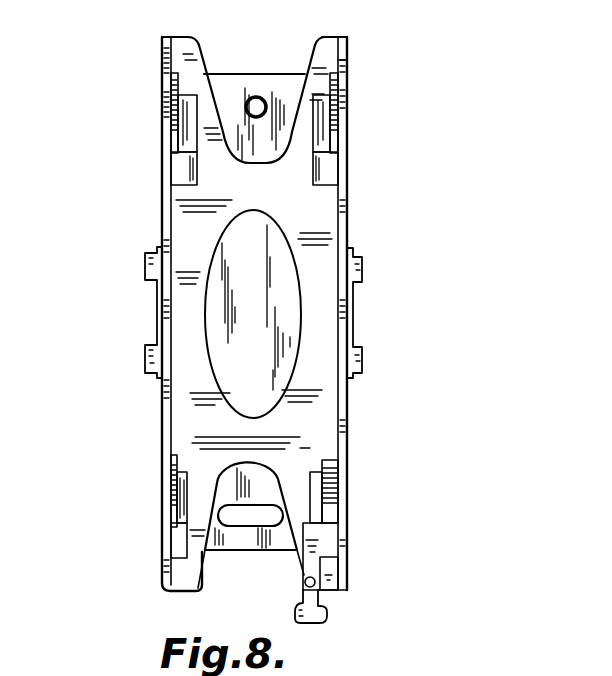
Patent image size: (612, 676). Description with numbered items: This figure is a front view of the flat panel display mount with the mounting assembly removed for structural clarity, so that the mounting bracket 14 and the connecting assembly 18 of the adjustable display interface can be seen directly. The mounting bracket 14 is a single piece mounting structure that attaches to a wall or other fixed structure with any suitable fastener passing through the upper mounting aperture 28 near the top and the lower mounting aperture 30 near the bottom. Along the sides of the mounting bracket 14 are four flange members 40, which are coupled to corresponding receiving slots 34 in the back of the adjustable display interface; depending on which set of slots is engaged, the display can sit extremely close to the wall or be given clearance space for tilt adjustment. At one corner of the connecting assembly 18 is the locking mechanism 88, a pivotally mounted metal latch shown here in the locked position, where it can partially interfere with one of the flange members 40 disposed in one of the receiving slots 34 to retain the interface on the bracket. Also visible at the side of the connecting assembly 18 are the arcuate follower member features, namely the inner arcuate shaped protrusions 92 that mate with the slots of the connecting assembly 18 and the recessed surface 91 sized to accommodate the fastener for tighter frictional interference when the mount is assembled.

The mounting bracket 14 is at (240, 558).
The connecting assembly 18 is at (338, 58).
The upper mounting aperture 28 is at (257, 96).
The lower mounting aperture 30 is at (265, 526).
The receiving slots 34 is at (180, 167).
The flange members 40 is at (178, 79).
The locking mechanism 88 is at (322, 610).
The recessed surface 91 is at (354, 315).
The inner arcuate shaped protrusions 92 is at (358, 267).